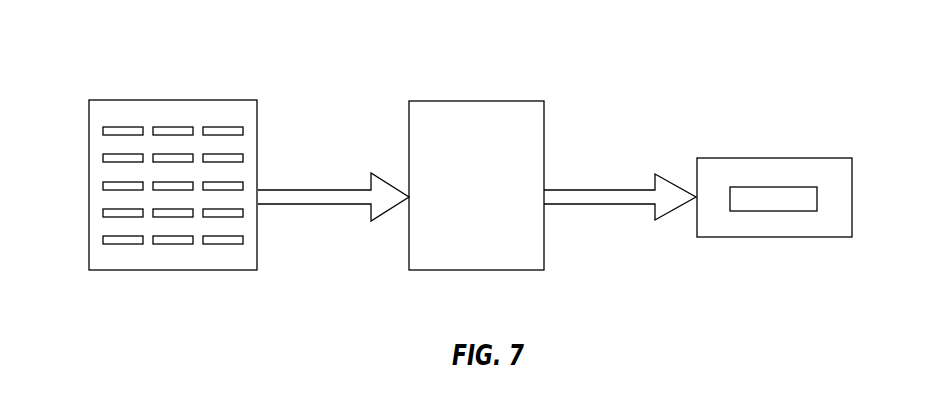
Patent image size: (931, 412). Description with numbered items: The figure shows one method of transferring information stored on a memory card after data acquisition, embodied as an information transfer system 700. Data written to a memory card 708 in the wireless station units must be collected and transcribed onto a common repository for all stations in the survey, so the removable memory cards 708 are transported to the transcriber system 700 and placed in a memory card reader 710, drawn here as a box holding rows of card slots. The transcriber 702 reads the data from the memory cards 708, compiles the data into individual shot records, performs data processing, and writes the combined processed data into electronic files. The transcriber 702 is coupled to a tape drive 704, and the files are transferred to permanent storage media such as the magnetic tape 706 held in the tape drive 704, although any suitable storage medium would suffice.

The information transfer system 700 is at (292, 68).
The transcriber 702 is at (463, 113).
The tape drive 704 is at (793, 158).
The magnetic tape 706 is at (777, 205).
The memory card 708 is at (172, 107).
The memory card reader 710 is at (89, 167).